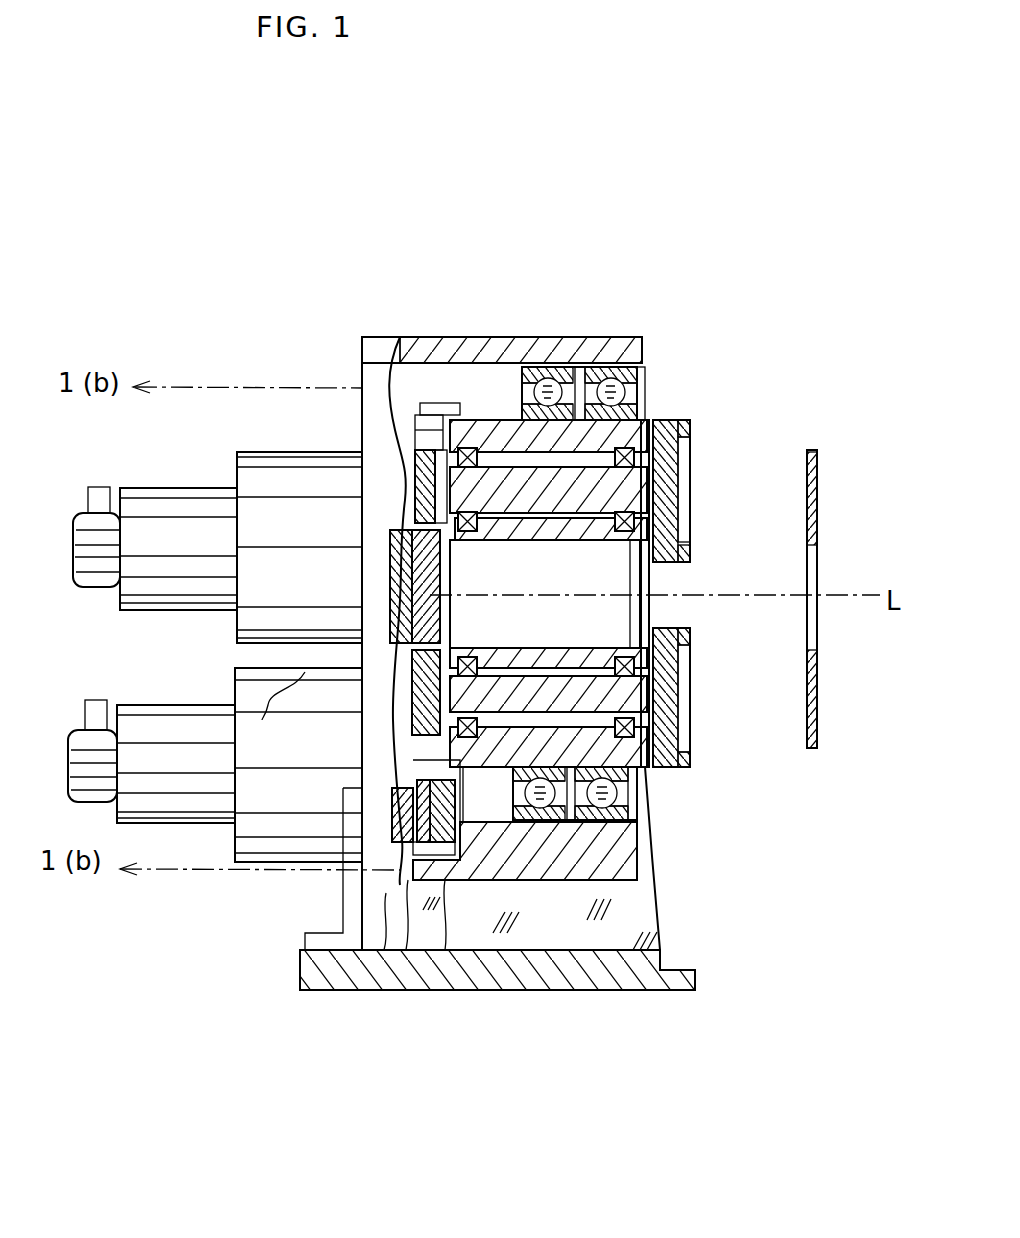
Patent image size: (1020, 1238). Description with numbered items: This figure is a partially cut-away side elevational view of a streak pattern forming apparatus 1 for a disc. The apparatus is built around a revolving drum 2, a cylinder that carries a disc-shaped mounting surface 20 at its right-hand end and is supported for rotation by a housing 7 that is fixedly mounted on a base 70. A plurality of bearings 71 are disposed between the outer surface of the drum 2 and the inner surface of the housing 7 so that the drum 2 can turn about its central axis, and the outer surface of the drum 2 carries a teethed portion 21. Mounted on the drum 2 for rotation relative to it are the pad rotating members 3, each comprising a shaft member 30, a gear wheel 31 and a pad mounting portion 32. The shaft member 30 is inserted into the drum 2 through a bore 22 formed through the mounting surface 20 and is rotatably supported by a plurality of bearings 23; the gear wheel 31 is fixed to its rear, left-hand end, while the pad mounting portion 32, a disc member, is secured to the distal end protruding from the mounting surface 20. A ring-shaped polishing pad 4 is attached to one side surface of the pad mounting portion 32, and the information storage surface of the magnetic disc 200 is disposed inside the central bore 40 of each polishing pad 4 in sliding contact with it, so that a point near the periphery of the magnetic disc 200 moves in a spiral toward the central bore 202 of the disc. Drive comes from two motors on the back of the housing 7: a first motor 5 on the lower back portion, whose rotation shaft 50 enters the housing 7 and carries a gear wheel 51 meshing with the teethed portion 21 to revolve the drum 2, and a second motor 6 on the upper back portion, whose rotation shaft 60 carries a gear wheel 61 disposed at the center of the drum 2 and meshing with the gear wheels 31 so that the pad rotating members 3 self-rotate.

The streak pattern forming apparatus 1 is at (302, 303).
The drum 2 is at (483, 412).
The pad rotating member 3 is at (710, 540).
The polishing pad 4 is at (692, 430).
The first motor 5 is at (187, 703).
The second motor 6 is at (172, 487).
The housing 7 is at (362, 337).
The mounting surface 20 is at (648, 610).
The teethed portion 21 is at (417, 400).
The bore 22 is at (692, 535).
The bearings 23 is at (637, 540).
The shaft member 30 is at (418, 440).
The gear wheel 31 is at (415, 470).
The pad mounting portion 32 is at (657, 395).
The central bore 40 is at (692, 483).
The rotation shaft 50 is at (383, 893).
The gear wheel 51 is at (433, 893).
The rotation shaft 60 is at (408, 597).
The gear wheel 61 is at (397, 650).
The base 70 is at (517, 978).
The bearings 71 is at (607, 367).
The magnetic disc 200 is at (852, 595).
The central bore 202 is at (778, 503).